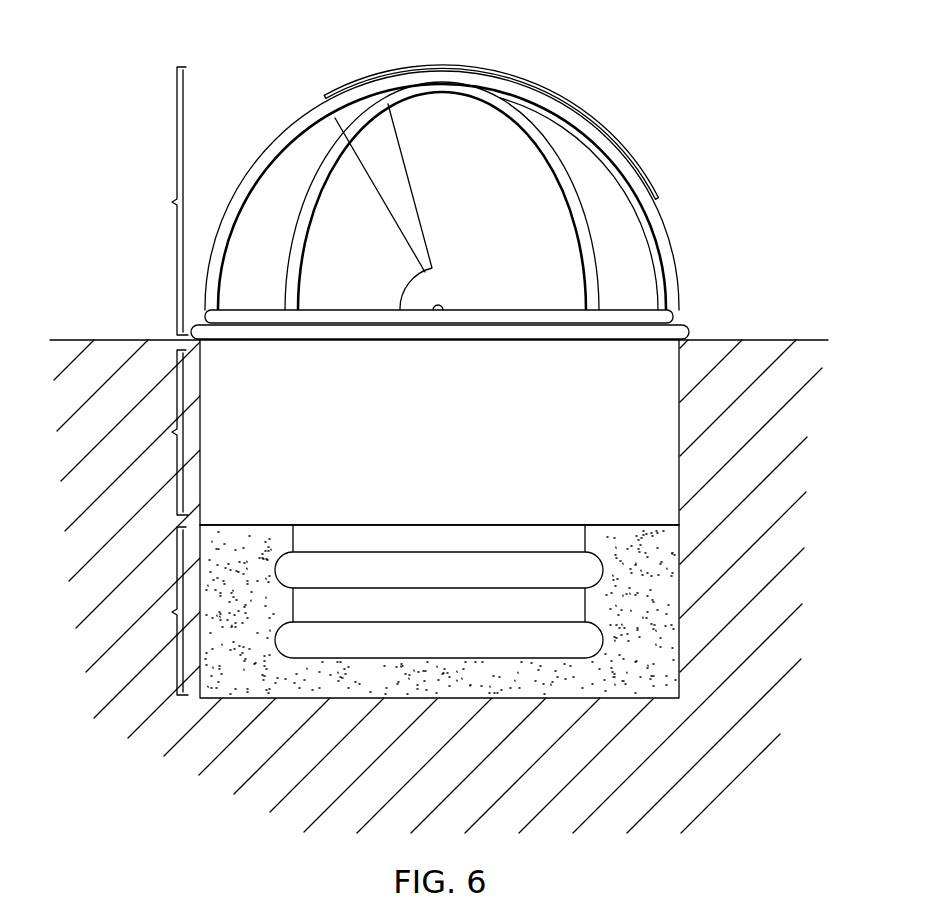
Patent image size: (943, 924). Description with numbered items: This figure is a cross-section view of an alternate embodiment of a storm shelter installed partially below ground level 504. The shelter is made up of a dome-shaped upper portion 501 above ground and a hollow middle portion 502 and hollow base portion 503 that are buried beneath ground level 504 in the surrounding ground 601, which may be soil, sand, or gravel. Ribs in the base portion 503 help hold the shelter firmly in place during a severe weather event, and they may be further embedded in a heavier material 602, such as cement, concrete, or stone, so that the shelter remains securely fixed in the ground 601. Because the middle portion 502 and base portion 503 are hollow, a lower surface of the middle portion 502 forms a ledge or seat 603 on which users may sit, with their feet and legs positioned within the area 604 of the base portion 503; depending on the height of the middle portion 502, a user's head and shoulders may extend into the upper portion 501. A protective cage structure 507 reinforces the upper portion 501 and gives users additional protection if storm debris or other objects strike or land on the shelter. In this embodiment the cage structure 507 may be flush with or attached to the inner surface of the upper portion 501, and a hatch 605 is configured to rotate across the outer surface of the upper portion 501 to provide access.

The upper portion 501 is at (408, 185).
The middle portion 502 is at (403, 432).
The base portion 503 is at (403, 585).
The ground level 504 is at (120, 338).
The cage structure 507 is at (267, 149).
The ground 601 is at (763, 514).
The heavier material 602 is at (658, 613).
The ledge or seat 603 is at (252, 523).
The area of base portion 604 is at (425, 547).
The hatch 605 is at (350, 79).